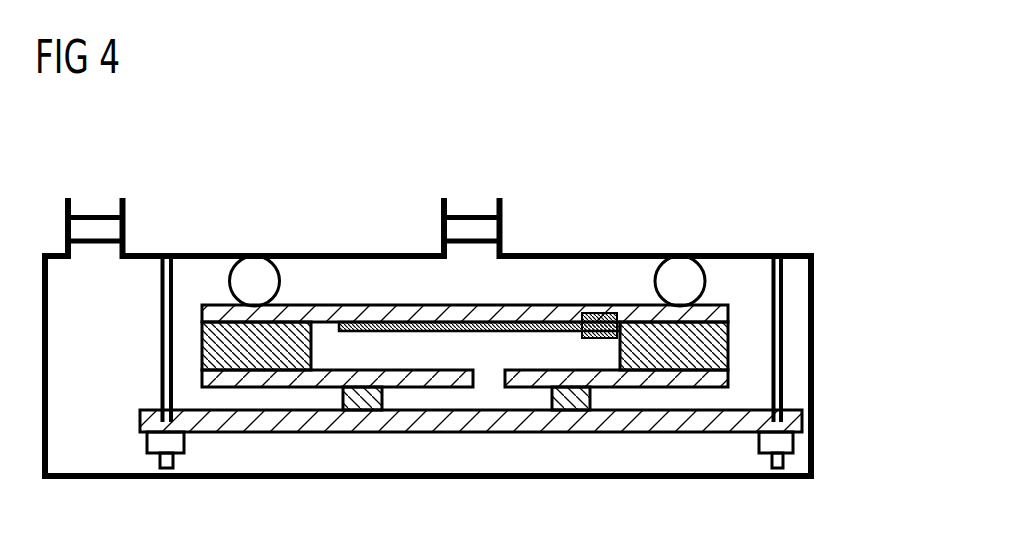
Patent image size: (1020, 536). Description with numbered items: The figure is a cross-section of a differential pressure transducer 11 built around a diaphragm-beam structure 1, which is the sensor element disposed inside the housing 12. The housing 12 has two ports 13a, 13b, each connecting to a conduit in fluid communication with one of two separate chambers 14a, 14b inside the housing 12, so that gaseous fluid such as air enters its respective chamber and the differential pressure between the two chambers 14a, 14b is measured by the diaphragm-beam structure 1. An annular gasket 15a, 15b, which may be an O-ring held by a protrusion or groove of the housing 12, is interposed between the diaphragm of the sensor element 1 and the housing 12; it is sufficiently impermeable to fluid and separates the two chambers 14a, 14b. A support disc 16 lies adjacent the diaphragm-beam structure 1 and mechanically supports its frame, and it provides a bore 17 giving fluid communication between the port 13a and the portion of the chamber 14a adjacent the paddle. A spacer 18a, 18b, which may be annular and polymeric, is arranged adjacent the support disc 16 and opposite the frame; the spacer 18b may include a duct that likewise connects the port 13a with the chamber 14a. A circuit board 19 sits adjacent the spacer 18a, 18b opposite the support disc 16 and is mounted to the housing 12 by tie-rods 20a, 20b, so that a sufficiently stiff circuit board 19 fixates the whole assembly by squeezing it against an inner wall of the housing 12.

The diaphragm-beam structure 1 is at (590, 287).
The differential pressure transducer 11 is at (778, 221).
The housing 12 is at (825, 422).
The port 13a is at (95, 205).
The port 13b is at (470, 204).
The chamber 14a is at (373, 350).
The chamber 14b is at (527, 268).
The gasket 15a is at (693, 280).
The gasket 15b is at (267, 278).
The support disc 16 is at (637, 380).
The bore 17 is at (488, 378).
The spacer 18a is at (570, 402).
The spacer 18b is at (362, 402).
The circuit board 19 is at (240, 420).
The tie-rod 20a is at (778, 313).
The tie-rod 20b is at (162, 313).